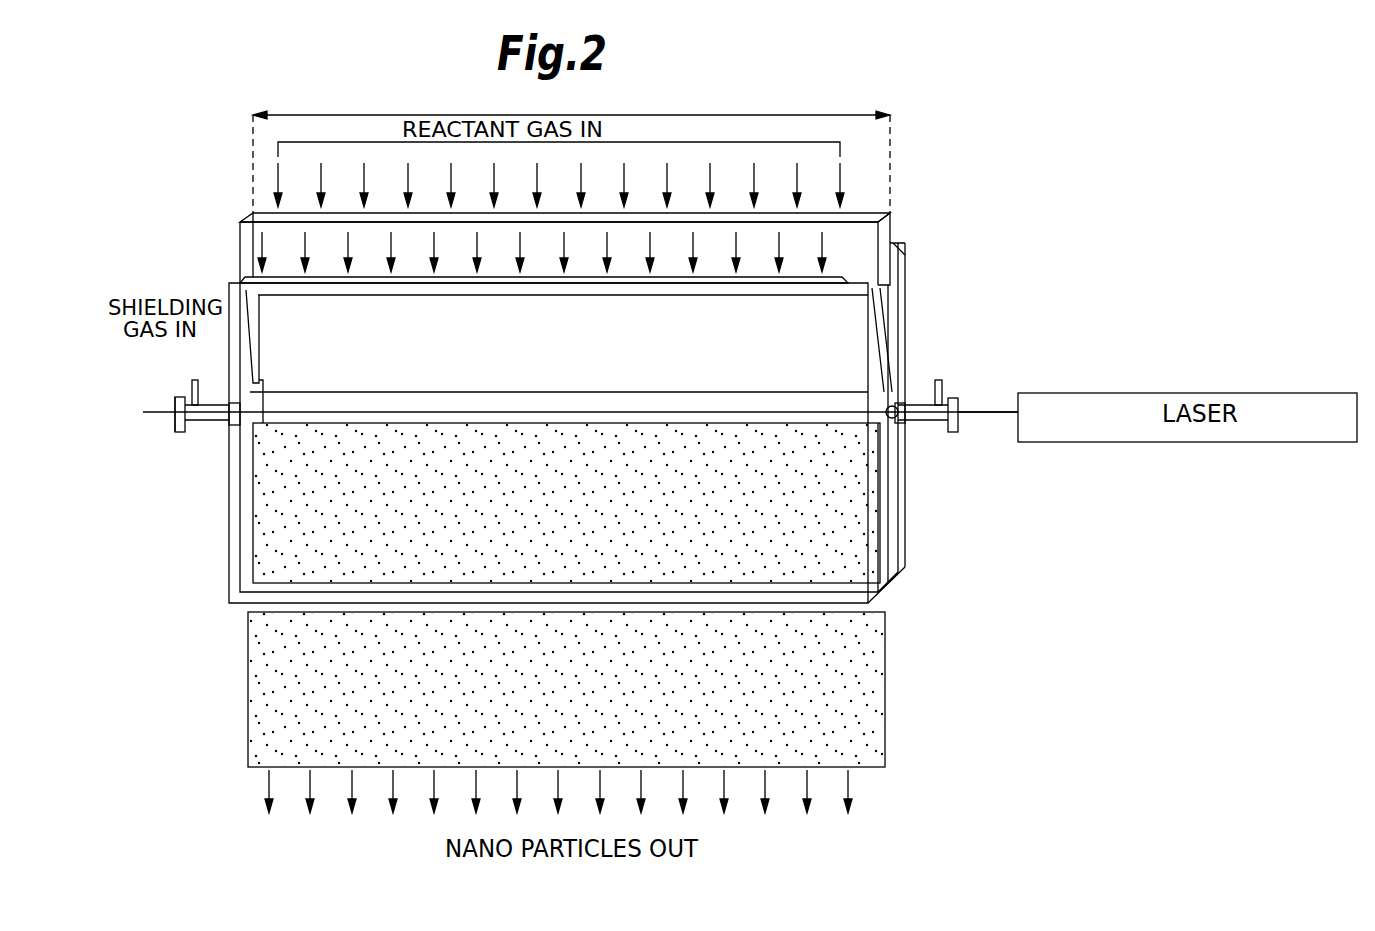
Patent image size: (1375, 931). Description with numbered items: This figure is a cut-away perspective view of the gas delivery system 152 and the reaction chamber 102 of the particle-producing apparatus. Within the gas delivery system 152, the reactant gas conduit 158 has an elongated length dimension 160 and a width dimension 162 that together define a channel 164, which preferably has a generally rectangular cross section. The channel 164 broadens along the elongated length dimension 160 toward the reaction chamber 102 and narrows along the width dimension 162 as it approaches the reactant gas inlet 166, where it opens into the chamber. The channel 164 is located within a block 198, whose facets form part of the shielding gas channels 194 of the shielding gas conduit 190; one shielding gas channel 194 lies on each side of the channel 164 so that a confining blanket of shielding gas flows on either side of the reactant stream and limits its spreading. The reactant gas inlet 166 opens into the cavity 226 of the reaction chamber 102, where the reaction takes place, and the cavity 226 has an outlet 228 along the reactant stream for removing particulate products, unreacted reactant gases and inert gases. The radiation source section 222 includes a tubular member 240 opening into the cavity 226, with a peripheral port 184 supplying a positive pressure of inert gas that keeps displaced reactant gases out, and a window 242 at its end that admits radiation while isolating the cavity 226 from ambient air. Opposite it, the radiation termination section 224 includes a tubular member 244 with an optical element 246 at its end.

The reaction chamber 102 is at (556, 418).
The gas delivery system 152 is at (567, 208).
The reactant gas conduit 158 is at (238, 252).
The elongated length dimension 160 is at (845, 115).
The width dimension 162 is at (878, 207).
The channel 164 is at (855, 213).
The reactant gas inlet 166 is at (895, 405).
The peripheral port 184 is at (192, 382).
The shielding gas conduit 190 is at (866, 294).
The shielding gas channel 194 is at (895, 250).
The block 198 is at (885, 232).
The radiation source section 222 is at (968, 425).
The radiation termination section 224 is at (172, 432).
The cavity 226 is at (898, 518).
The outlet 228 is at (893, 583).
The tubular member 240 is at (920, 424).
The window 242 is at (960, 400).
The tubular member 244 is at (210, 424).
The optical element 246 is at (175, 400).